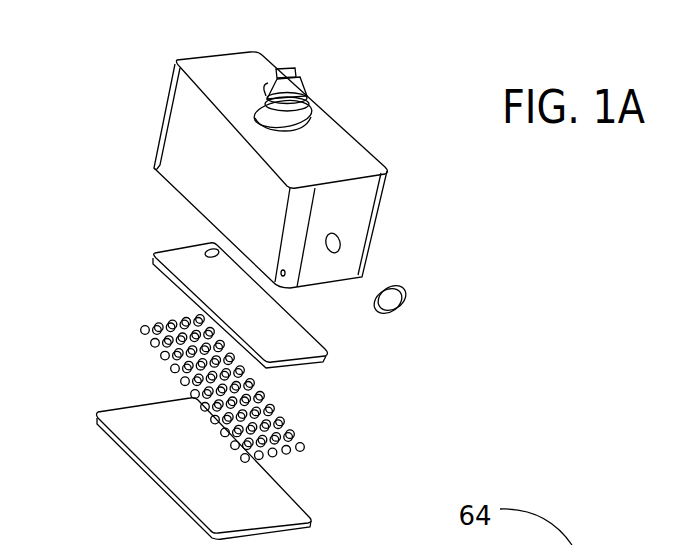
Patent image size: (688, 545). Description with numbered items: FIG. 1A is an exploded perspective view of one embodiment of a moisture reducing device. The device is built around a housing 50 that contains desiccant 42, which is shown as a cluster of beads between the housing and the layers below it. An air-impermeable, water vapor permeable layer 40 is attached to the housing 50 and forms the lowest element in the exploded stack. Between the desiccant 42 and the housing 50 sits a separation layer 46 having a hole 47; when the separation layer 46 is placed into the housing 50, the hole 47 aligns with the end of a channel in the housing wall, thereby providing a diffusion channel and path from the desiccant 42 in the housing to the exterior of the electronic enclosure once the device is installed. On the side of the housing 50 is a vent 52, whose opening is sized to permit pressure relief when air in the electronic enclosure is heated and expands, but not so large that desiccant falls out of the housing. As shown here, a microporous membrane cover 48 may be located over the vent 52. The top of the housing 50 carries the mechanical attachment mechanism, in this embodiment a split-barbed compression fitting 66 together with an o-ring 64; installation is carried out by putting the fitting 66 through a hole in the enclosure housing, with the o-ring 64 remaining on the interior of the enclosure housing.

The housing 50 is at (216, 57).
The split-barbed compression fitting 66 is at (310, 83).
The o-ring 64 is at (315, 126).
The vent 52 is at (341, 239).
The microporous membrane cover 48 is at (409, 291).
The separation layer 46 is at (182, 247).
The hole 47 is at (218, 261).
The desiccant 42 is at (296, 432).
The air-impermeable, water vapor permeable layer 40 is at (117, 445).